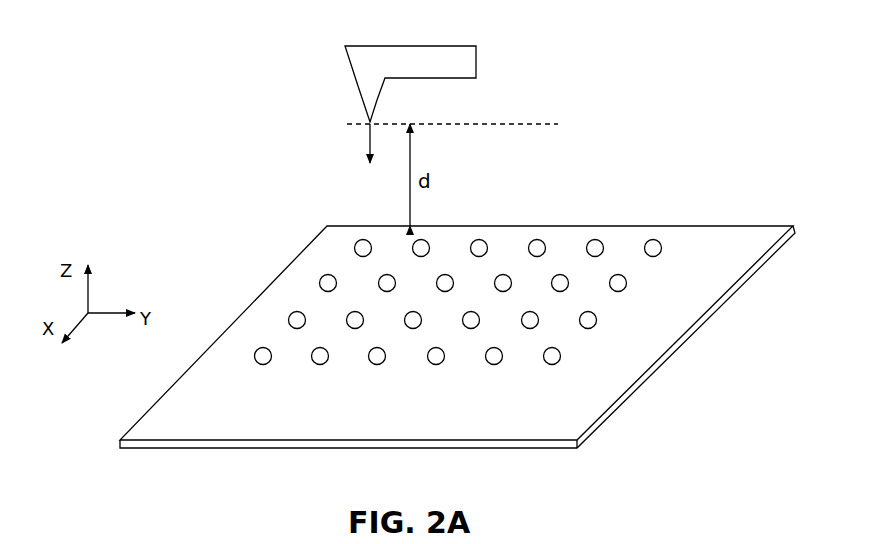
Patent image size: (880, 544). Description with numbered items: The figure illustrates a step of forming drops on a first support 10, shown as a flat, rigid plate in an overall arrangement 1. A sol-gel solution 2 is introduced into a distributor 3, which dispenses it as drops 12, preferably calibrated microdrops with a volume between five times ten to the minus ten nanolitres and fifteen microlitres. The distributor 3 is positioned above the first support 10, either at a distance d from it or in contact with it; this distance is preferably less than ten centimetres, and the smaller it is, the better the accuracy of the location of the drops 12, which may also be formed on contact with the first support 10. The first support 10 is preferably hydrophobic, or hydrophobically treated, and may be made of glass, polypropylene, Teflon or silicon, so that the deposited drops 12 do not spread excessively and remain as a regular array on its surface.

The scanning probe system 1 is at (170, 86).
The sol-gel solution 2 is at (384, 60).
The distributor 3 is at (358, 110).
The first support 10 is at (346, 252).
The drops 12 is at (360, 245).